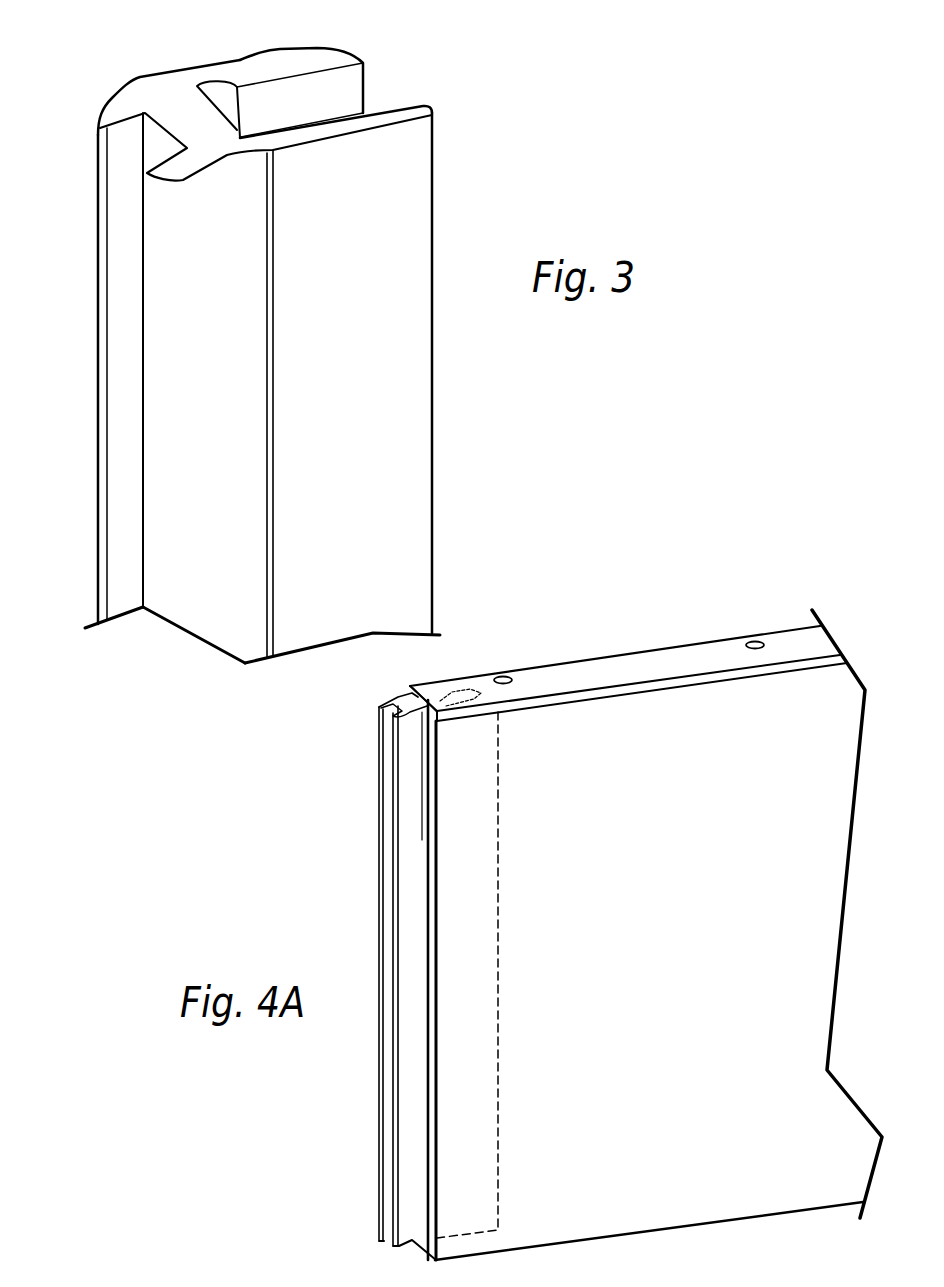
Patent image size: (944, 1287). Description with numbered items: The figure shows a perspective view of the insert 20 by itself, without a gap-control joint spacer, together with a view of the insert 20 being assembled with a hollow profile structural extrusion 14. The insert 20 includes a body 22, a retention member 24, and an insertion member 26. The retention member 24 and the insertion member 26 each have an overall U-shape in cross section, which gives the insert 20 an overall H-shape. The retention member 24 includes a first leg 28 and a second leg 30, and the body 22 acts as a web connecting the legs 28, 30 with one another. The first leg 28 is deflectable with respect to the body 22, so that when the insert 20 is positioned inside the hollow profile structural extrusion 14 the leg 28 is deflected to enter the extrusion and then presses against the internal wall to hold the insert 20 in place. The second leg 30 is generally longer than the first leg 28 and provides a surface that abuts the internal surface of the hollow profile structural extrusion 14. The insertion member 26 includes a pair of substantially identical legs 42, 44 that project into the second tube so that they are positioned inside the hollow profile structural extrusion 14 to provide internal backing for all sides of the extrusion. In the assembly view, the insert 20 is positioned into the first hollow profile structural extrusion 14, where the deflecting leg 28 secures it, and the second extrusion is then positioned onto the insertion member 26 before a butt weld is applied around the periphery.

In FIG. 4A, the hollow profile structural extrusion 14 is at (607, 672).
In FIG. 3, the insert 20 is at (299, 333).
In FIG. 4A, the insert 20 is at (436, 966).
In FIG. 3, the body 22 is at (178, 52).
In FIG. 3, the retention member 24 is at (366, 77).
In FIG. 4A, the retention member 24 is at (503, 986).
In FIG. 3, the insertion member 26 is at (91, 341).
In FIG. 4A, the insertion member 26 is at (366, 733).
In FIG. 3, the first leg 28 is at (355, 80).
In FIG. 3, the second leg 30 is at (433, 147).
In FIG. 3, the leg 42 is at (95, 310).
In FIG. 3, the leg 44 is at (118, 392).